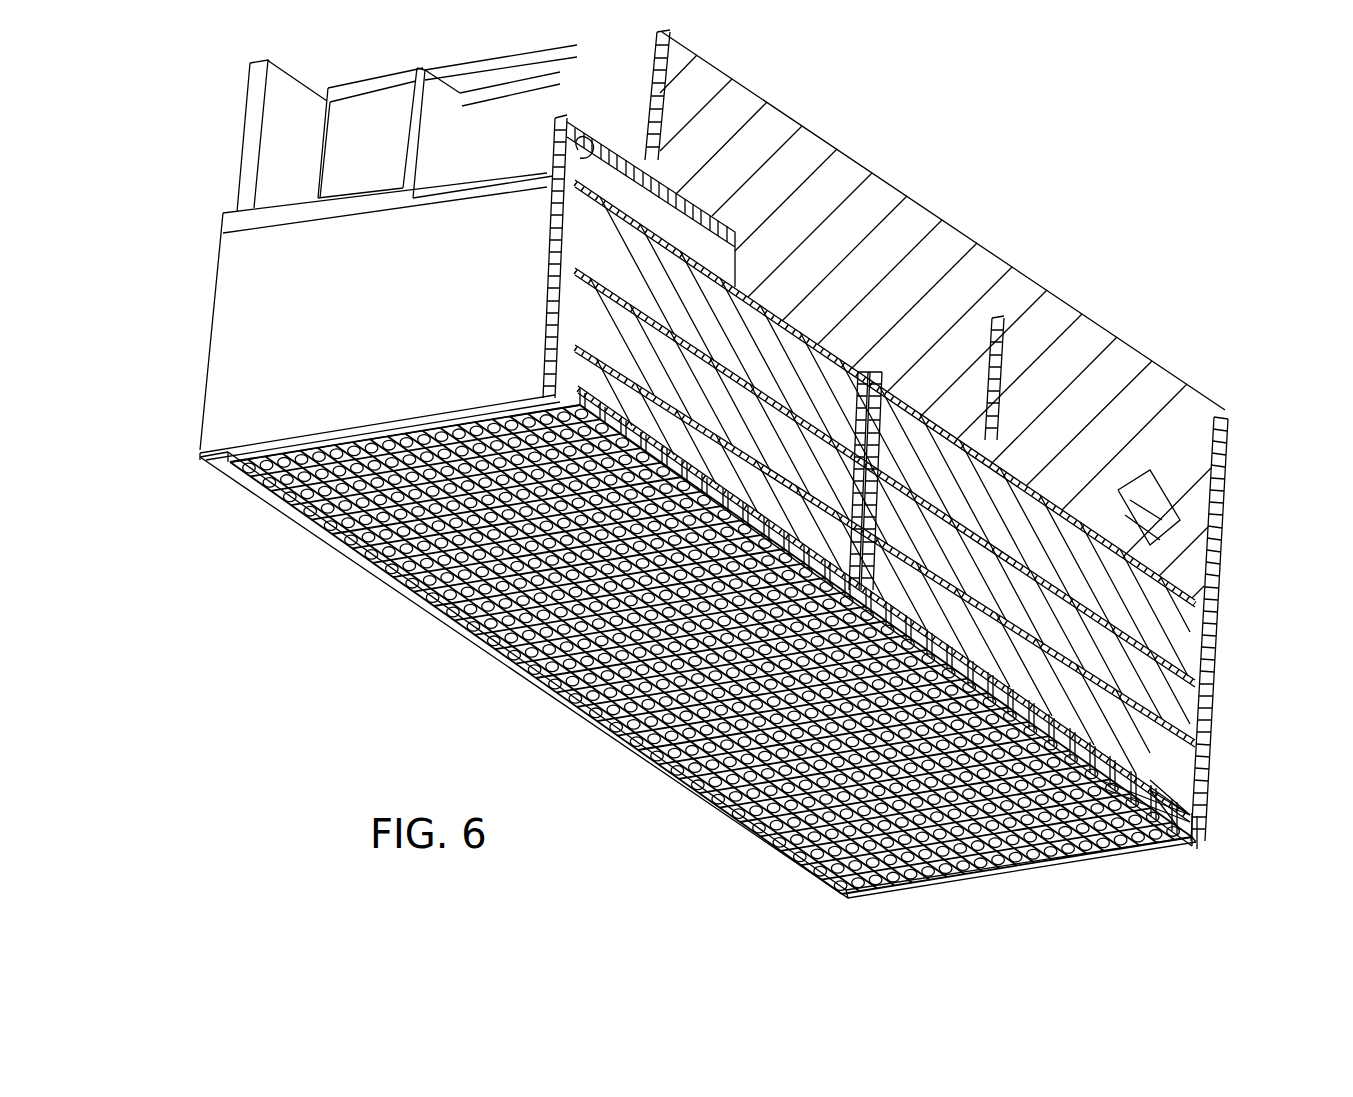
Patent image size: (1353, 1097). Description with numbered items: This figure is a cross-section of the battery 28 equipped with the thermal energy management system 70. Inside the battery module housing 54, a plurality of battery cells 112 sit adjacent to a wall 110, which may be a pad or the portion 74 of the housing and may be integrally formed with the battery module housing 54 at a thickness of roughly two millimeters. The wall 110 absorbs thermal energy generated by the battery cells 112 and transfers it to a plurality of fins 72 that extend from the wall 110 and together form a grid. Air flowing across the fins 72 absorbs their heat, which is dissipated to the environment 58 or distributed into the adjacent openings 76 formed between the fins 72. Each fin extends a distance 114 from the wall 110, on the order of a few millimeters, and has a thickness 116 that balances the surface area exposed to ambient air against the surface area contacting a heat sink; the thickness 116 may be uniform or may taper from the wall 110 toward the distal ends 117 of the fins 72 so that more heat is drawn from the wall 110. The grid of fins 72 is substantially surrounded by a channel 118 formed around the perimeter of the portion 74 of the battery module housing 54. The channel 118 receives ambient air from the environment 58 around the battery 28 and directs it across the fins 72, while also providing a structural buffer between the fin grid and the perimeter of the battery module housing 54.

The battery 28 is at (1065, 250).
The battery module housing 54 is at (232, 350).
The environment 58 is at (350, 652).
The thermal energy management system 70 is at (515, 705).
The plurality of fins 72 is at (1150, 808).
The portion 74 is at (340, 438).
The adjacent openings 76 is at (965, 690).
The wall 110 is at (635, 435).
The plurality of battery cells 112 is at (615, 370).
The distance 114 is at (1095, 745).
The thickness 116 is at (736, 500).
The distal ends 117 is at (1165, 846).
The channel 118 is at (488, 420).